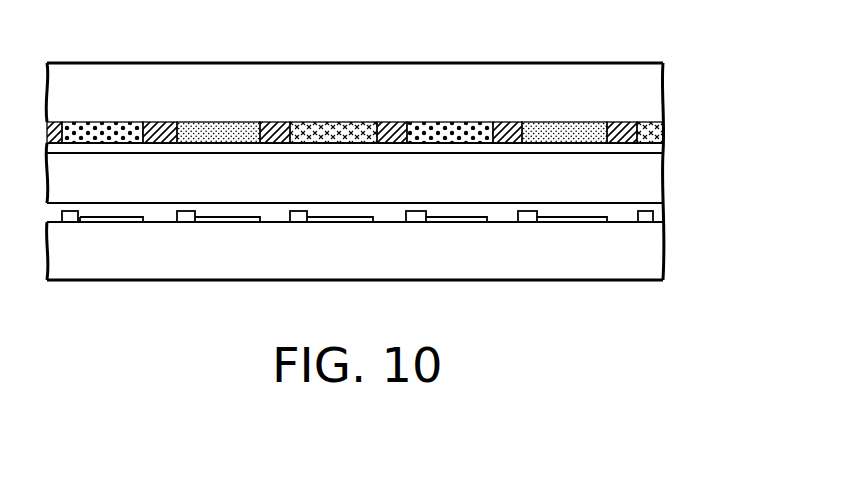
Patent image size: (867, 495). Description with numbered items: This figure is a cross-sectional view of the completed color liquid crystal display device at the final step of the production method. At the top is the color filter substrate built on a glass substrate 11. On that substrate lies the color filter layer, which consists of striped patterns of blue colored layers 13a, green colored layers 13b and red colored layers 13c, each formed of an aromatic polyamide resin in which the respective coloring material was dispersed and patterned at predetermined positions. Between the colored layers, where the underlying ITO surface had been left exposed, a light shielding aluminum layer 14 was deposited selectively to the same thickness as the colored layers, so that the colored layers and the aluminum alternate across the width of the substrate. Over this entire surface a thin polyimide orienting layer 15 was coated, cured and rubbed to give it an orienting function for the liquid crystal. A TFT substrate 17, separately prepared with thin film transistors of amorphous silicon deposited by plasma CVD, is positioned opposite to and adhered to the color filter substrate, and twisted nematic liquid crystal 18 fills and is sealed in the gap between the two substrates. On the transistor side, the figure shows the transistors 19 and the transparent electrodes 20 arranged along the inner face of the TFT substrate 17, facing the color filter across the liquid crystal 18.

The glass substrate 11 is at (612, 85).
The blue colored layers 13a is at (213, 122).
The green colored layers 13b is at (333, 122).
The red colored layers 13c is at (453, 122).
The light shielding aluminum layer 14 is at (509, 124).
The orienting layer 15 is at (666, 147).
The TFT substrate 17 is at (652, 250).
The twisted nematic liquid crystal 18 is at (652, 190).
The transistors 19 is at (528, 222).
The transparent electrodes 20 is at (583, 222).